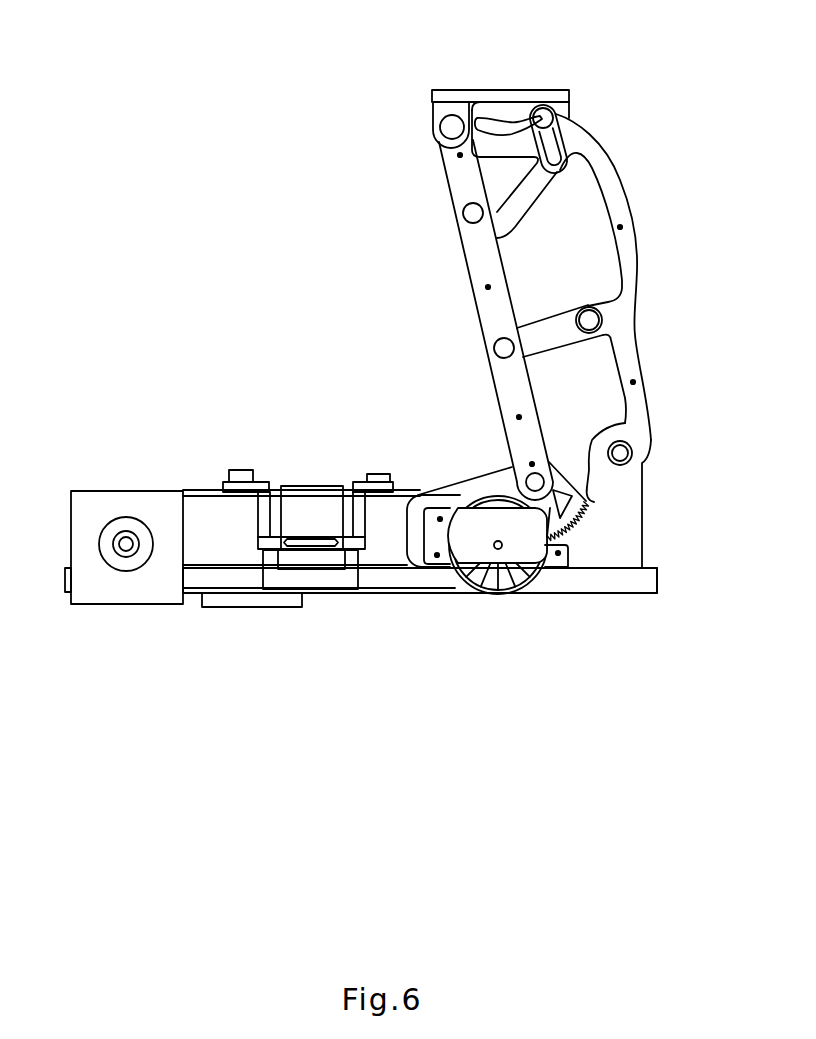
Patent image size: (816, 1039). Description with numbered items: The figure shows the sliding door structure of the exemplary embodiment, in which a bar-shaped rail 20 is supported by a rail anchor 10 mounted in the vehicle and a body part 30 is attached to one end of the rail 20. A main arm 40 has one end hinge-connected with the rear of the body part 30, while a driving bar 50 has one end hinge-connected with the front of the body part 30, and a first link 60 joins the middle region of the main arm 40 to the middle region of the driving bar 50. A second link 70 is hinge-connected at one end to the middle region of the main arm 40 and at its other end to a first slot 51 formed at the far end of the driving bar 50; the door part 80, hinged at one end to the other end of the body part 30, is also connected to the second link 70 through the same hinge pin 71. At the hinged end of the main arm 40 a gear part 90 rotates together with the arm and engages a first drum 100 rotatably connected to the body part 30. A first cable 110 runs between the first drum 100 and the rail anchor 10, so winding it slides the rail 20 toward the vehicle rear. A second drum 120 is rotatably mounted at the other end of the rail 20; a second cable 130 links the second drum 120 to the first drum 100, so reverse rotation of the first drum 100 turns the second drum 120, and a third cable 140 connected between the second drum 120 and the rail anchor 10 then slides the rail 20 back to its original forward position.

The rail anchor 10 is at (322, 580).
The rail 20 is at (433, 580).
The body part 30 is at (638, 523).
The main arm 40 is at (476, 262).
The driving bar 50 is at (613, 172).
The first slot 51 is at (577, 147).
The first link 60 is at (558, 340).
The second link 70 is at (527, 203).
The hinge pin 71 is at (557, 116).
The door part 80 is at (510, 88).
The gear part 90 is at (586, 508).
The first drum 100 is at (503, 582).
The first cable 110 is at (407, 490).
The second drum 120 is at (130, 596).
The second cable 130 is at (393, 590).
The third cable 140 is at (200, 492).